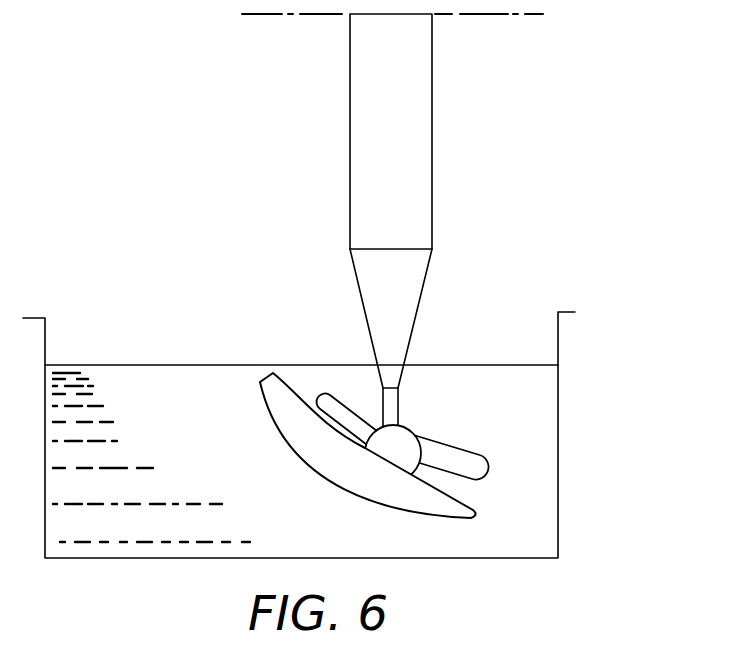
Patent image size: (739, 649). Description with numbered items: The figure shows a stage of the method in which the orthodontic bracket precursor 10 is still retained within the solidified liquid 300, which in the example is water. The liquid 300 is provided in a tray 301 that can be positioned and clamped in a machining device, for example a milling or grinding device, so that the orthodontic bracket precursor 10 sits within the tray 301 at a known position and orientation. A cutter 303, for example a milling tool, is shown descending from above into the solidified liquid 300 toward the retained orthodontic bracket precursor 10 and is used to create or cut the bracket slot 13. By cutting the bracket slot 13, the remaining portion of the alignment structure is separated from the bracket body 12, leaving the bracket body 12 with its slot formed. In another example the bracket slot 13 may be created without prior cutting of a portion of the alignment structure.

The orthodontic bracket precursor 10 is at (398, 423).
The bracket body 12 is at (440, 450).
The bracket slot 13 is at (400, 425).
The liquid 300 is at (338, 435).
The tray 301 is at (562, 315).
The cutter 303 is at (415, 118).